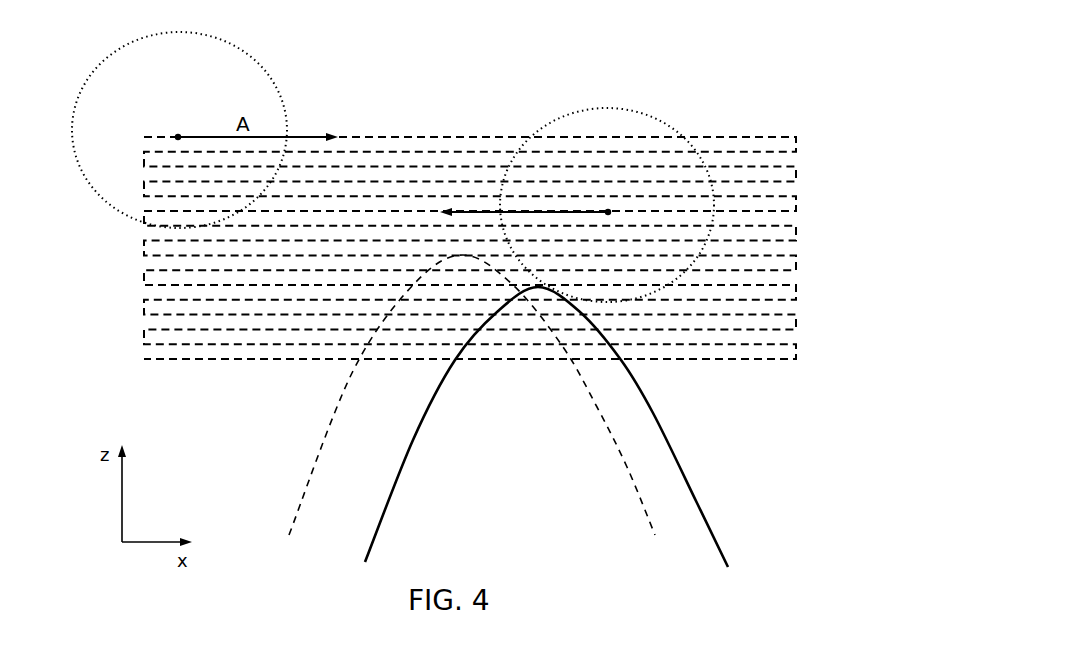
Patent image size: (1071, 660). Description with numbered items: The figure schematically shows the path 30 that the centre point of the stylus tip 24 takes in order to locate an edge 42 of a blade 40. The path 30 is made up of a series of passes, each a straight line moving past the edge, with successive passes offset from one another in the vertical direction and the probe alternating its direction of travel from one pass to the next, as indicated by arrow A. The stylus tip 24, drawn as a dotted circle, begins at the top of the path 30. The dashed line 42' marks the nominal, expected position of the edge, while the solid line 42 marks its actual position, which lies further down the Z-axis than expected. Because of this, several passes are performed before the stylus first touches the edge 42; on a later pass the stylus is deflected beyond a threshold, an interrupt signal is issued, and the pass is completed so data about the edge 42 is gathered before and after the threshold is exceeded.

The stylus tip 24 is at (232, 44).
The path 30 is at (422, 137).
The blade 40 is at (543, 505).
The edge 42 is at (577, 427).
The nominal position of the edge 42' is at (448, 395).